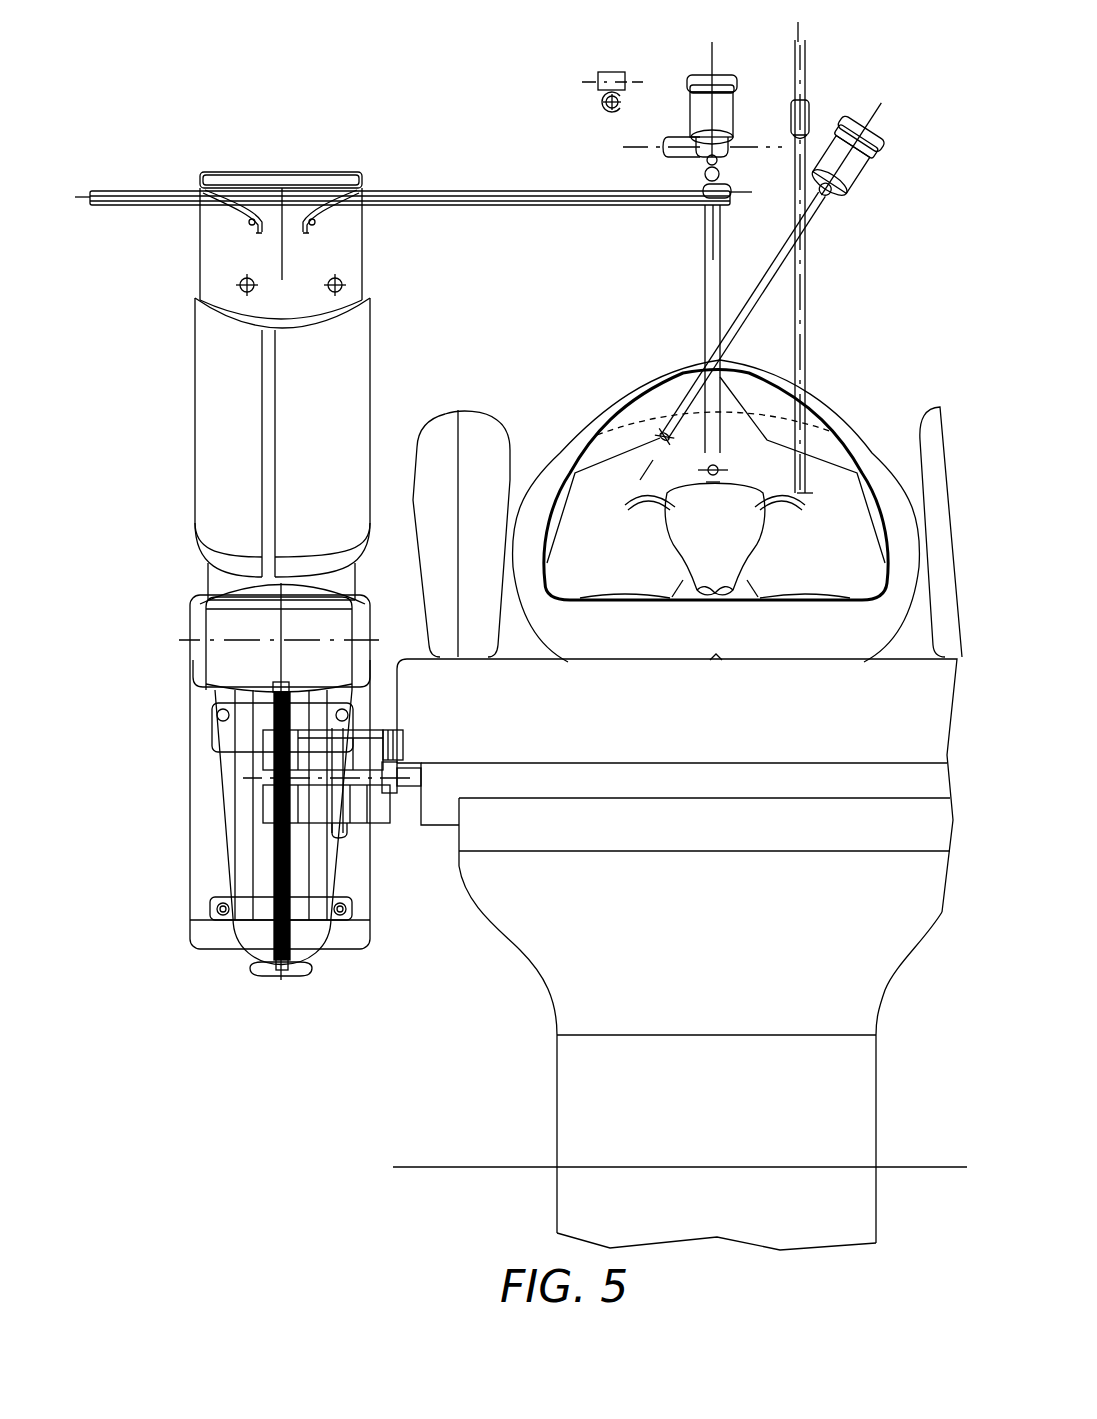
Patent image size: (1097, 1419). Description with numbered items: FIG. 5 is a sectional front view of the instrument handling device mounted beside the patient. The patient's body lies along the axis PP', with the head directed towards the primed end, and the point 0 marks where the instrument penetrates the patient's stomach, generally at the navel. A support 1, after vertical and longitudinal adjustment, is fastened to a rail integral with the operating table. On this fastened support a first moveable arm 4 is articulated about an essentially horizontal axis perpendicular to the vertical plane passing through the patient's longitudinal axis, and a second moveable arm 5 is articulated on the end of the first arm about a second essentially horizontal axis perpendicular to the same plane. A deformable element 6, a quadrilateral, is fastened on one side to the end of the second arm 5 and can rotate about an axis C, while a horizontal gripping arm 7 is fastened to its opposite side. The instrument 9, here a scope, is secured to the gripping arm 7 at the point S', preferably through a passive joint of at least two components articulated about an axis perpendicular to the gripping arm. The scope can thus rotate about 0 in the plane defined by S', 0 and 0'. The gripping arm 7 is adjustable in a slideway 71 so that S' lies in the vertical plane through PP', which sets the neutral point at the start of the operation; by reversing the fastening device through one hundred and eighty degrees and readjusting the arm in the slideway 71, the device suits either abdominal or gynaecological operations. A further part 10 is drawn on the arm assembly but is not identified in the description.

The support 1 is at (188, 810).
The first moveable arm 4 is at (372, 930).
The second moveable arm 5 is at (348, 583).
The deformable element 6 is at (348, 393).
The horizontal gripping arm 7 is at (520, 190).
The slideway 71 is at (205, 185).
The instrument 9 is at (703, 305).
The lead screw 10 is at (272, 905).
The point of penetration 0 is at (773, 271).
The reference point of rotation plane 0' is at (809, 257).
The fastening point of the scope S' is at (679, 151).
The patient's longitudinal axis PP' is at (680, 805).